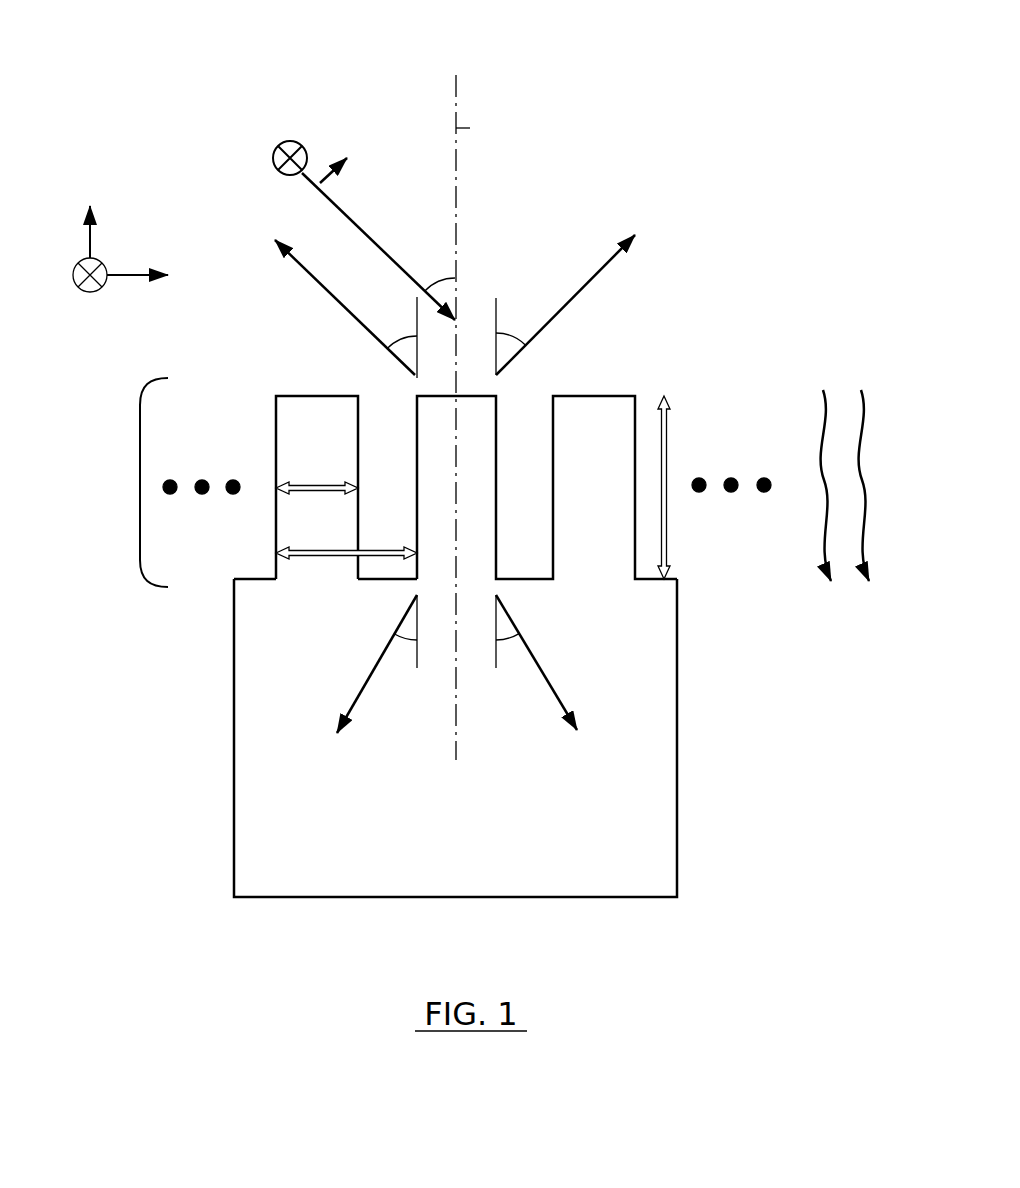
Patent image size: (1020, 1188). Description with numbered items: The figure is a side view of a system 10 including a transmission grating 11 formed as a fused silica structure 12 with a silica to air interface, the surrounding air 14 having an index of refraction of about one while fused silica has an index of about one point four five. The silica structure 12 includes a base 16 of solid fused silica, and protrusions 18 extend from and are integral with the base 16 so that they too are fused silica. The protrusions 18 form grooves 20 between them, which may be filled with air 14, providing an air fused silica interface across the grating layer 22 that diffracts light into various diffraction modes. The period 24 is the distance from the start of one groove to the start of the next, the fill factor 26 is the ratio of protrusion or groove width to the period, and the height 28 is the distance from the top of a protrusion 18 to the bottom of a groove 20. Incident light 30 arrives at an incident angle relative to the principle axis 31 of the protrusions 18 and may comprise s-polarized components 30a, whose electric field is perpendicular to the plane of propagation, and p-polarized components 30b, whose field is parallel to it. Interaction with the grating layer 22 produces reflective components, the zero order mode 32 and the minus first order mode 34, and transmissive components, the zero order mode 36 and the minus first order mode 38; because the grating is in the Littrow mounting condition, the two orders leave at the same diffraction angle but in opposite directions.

The system 10 is at (728, 80).
The transmission grating 11 is at (670, 350).
The silica structure 12 is at (399, 621).
The air 14 is at (551, 175).
The base 16 is at (679, 738).
The protrusions 18 is at (317, 395).
The grooves 20 is at (390, 440).
The grating layer 22 is at (396, 481).
The period 24 is at (316, 583).
The fill factor 26 is at (307, 497).
The height 28 is at (669, 437).
The incident light 30 is at (349, 179).
The s-polarized component 30a is at (281, 114).
The p-polarized component 30b is at (386, 121).
The principle axis 31 is at (470, 128).
The zero order reflective component 32 is at (561, 311).
The minus first order reflective component 34 is at (330, 294).
The zero order transmissive component 36 is at (545, 677).
The minus first order transmissive component 38 is at (376, 665).